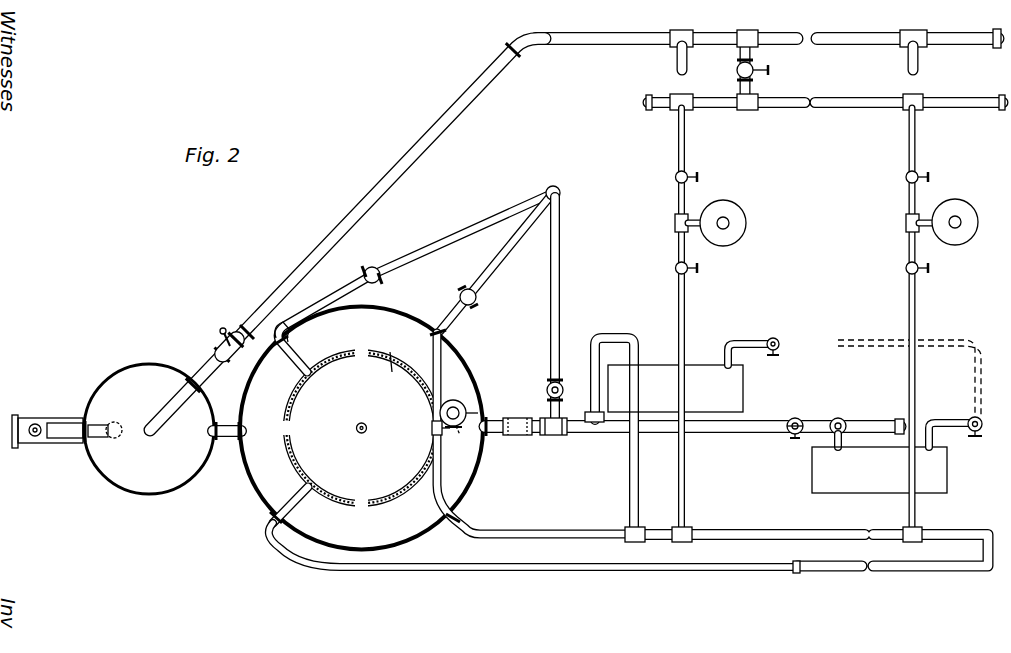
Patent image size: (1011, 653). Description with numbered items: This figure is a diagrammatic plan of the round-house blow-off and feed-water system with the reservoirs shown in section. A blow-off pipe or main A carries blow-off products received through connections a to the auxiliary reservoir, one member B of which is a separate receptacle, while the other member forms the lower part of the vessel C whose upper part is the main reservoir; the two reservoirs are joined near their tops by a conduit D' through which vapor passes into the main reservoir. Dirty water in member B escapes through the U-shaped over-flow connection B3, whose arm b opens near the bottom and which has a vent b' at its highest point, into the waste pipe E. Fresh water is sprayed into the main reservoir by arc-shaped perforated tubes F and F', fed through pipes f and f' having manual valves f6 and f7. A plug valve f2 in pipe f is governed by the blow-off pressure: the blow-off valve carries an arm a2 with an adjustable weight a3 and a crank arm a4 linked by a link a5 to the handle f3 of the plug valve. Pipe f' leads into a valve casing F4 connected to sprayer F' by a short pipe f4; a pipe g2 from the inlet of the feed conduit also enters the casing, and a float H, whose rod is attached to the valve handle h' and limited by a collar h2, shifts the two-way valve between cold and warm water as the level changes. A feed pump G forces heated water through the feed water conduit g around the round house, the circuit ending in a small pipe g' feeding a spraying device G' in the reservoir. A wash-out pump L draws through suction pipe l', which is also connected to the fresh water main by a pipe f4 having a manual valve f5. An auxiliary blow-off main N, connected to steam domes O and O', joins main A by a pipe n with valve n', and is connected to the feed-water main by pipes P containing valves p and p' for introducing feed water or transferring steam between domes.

The blow-off pipe or main A is at (370, 195).
The connections a is at (676, 64).
The arm a2 is at (222, 348).
The weight a3 is at (224, 328).
The crank arm a4 is at (222, 362).
The link a5 is at (250, 338).
The auxiliary reservoir member B is at (149, 429).
The arm of over-flow device b is at (125, 449).
The vent b' is at (38, 412).
The over-flow connection B3 is at (65, 424).
The sewer or waste pipe E is at (52, 443).
The conduit D' is at (222, 452).
The vessel or receptacle C is at (361, 428).
The arc-shaped perforated tube F is at (361, 428).
The arc-shaped perforated tube F' is at (382, 374).
The valve casing F4 is at (432, 432).
The spraying device G' is at (306, 488).
The pipe f is at (415, 282).
The pipe f' is at (500, 258).
The plug valve f2 is at (288, 342).
The handle f3 is at (278, 330).
The pipe f4 is at (561, 302).
The manually controlled valve f5 is at (550, 380).
The manually controlled valve f6 is at (372, 266).
The manually controlled valve f7 is at (460, 296).
The float H is at (463, 403).
The handle h' is at (464, 441).
The collar h2 is at (478, 413).
The suction pipe l' is at (694, 446).
The feed water conduit g is at (786, 452).
The pipe of small diameter g' is at (534, 557).
The pipe g2 is at (518, 532).
The feed pump G is at (693, 375).
The wash-out pump L is at (897, 416).
The auxiliary blow-off main N is at (838, 110).
The pipe n is at (721, 70).
The valve n' is at (774, 66).
The pipes P is at (686, 318).
The valves p is at (783, 268).
The valves p' is at (783, 173).
The steam dome O is at (725, 223).
The steam dome O' is at (951, 207).